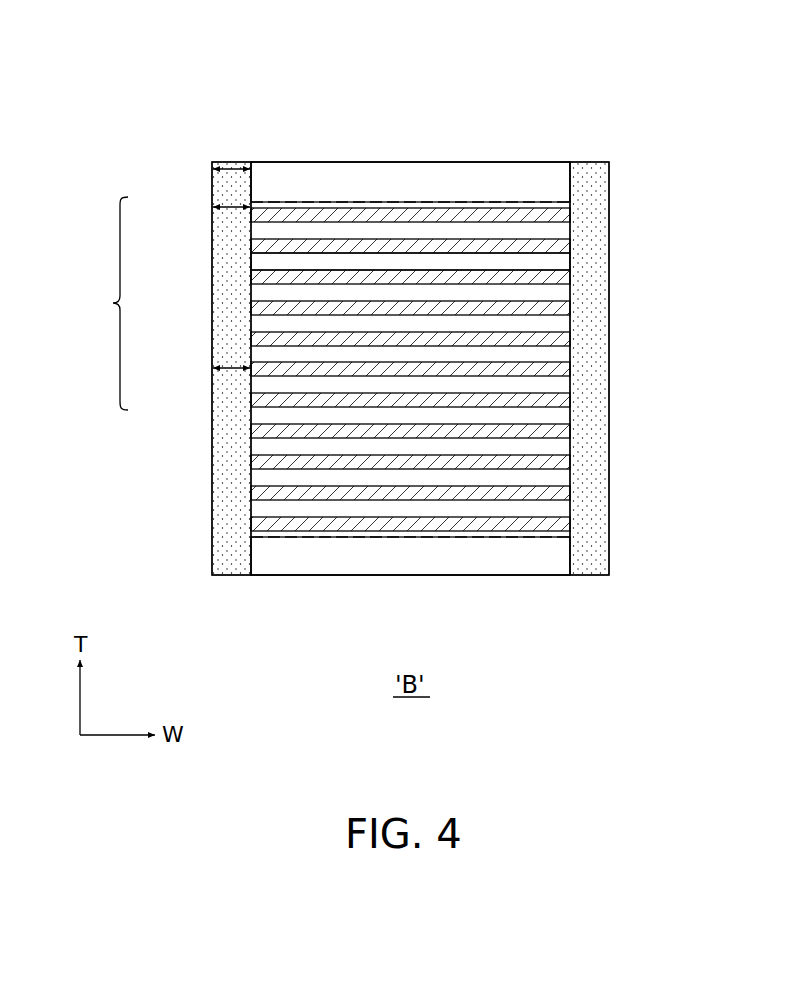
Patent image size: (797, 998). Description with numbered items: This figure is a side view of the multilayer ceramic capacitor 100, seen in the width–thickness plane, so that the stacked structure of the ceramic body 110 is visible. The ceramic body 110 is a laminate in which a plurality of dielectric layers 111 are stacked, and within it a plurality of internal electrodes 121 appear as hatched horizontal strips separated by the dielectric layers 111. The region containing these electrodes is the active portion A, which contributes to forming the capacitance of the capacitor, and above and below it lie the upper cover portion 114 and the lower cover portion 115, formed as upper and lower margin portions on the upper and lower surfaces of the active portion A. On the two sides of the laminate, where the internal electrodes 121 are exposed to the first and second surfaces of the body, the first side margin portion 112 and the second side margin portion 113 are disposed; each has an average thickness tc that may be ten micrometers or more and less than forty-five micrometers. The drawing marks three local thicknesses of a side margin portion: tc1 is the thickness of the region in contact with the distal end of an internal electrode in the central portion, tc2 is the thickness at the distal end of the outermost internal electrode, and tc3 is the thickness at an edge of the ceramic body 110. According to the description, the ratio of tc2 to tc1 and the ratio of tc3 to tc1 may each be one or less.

The multilayer ceramic capacitor 100 is at (421, 30).
The ceramic body 110 is at (426, 162).
The dielectric layer 111 is at (573, 263).
The first side margin portion 112 is at (222, 565).
The second side margin portion 113 is at (592, 562).
The upper cover portion 114 is at (534, 182).
The lower cover portion 115 is at (512, 560).
The internal electrode 121 is at (573, 247).
The active portion A is at (580, 463).
The average thickness of side margin portion tc is at (109, 303).
The thickness of side margin region at central internal electrode tc1 is at (228, 371).
The thickness of side margin region at outermost internal electrode tc2 is at (227, 210).
The thickness of side margin region at ceramic body edge tc3 is at (226, 172).